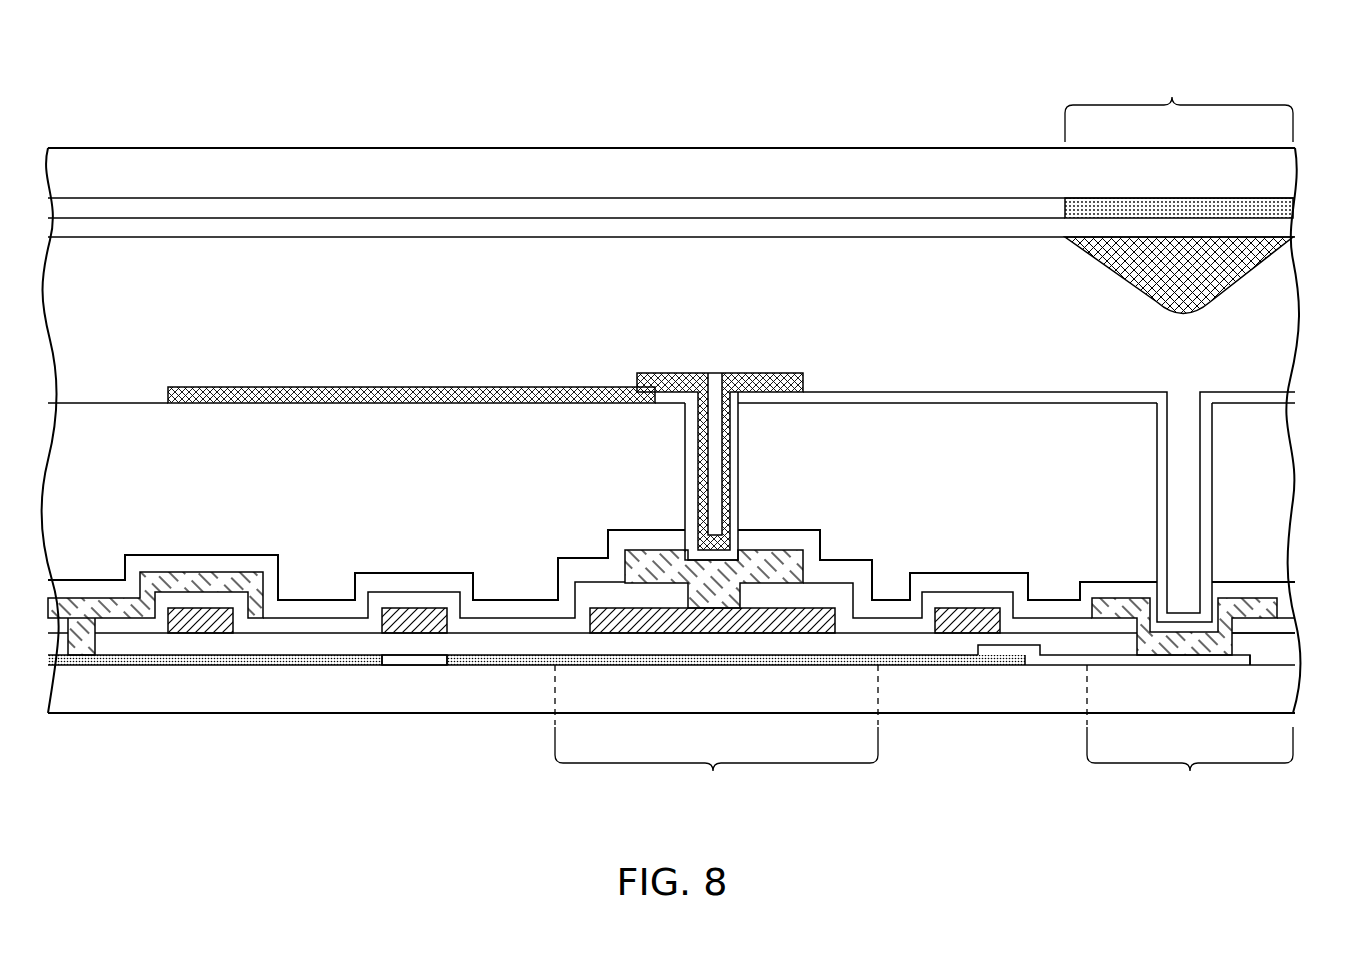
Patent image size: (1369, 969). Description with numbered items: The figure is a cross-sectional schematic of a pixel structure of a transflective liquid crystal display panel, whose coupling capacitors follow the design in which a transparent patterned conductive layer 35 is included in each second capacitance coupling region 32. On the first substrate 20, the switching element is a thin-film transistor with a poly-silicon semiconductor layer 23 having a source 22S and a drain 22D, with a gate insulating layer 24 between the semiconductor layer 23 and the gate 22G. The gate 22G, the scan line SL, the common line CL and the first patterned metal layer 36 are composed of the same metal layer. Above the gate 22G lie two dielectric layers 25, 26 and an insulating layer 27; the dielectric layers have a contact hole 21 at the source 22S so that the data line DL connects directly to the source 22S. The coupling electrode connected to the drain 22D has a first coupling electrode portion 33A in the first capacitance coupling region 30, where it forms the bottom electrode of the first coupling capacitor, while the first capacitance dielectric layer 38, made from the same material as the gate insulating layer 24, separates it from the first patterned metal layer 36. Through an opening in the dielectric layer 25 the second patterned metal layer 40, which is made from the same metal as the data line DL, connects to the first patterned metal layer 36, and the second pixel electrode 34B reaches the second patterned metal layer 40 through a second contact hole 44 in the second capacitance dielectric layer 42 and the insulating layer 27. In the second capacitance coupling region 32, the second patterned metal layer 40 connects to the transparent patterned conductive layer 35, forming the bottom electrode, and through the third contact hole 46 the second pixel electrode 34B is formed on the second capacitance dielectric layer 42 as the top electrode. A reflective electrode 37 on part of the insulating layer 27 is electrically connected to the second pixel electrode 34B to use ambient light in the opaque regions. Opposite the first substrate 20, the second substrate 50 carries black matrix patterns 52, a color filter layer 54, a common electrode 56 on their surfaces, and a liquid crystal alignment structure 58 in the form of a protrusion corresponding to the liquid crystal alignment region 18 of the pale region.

The liquid crystal alignment region 18 is at (1172, 97).
The first substrate 20 is at (641, 703).
The contact hole 21 is at (80, 655).
The source 22S is at (130, 660).
The gate 22G is at (405, 625).
The drain 22D is at (520, 660).
The semiconductor layer 23 is at (440, 663).
The gate insulating layer 24 is at (268, 645).
The dielectric layer 25 is at (345, 625).
The dielectric layer 26 is at (298, 605).
The insulating layer 27 is at (354, 492).
The first capacitance coupling region 30 is at (713, 771).
The second capacitance coupling region 32 is at (1190, 771).
The first coupling electrode portion 33A is at (808, 660).
The second pixel electrode 34B is at (988, 402).
The transparent patterned conductive layer 35 is at (1010, 655).
The first patterned metal layer 36 is at (722, 622).
The reflective electrode 37 is at (542, 387).
The first capacitance dielectric layer 38 is at (907, 643).
The second patterned metal layer 40 is at (658, 565).
The second capacitance dielectric layer 42 is at (1282, 590).
The second contact hole 44 is at (716, 374).
The third contact hole 46 is at (1184, 387).
The second substrate 50 is at (641, 187).
The black matrix pattern 52 is at (1288, 207).
The color filter layer 54 is at (858, 206).
The common electrode 56 is at (1283, 228).
The liquid crystal alignment structure 58 is at (1225, 278).
The scan line SL is at (193, 627).
The data line DL is at (193, 573).
The common line CL is at (965, 625).